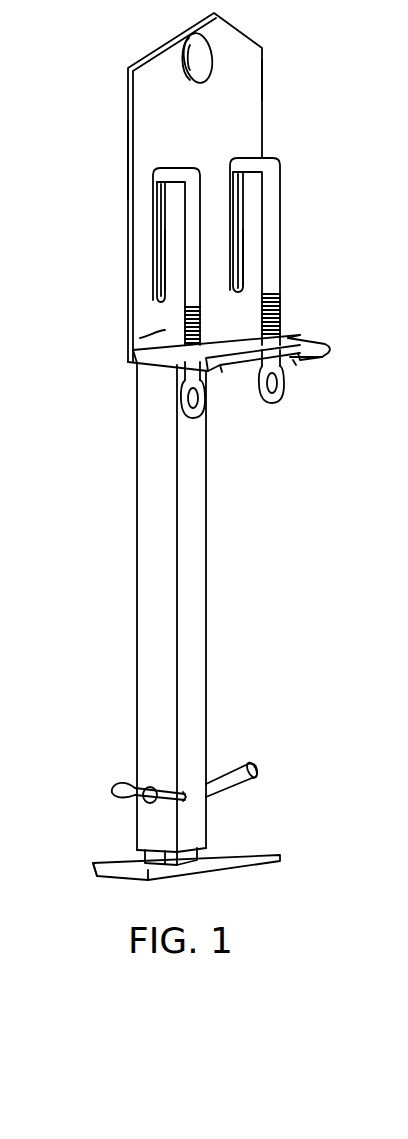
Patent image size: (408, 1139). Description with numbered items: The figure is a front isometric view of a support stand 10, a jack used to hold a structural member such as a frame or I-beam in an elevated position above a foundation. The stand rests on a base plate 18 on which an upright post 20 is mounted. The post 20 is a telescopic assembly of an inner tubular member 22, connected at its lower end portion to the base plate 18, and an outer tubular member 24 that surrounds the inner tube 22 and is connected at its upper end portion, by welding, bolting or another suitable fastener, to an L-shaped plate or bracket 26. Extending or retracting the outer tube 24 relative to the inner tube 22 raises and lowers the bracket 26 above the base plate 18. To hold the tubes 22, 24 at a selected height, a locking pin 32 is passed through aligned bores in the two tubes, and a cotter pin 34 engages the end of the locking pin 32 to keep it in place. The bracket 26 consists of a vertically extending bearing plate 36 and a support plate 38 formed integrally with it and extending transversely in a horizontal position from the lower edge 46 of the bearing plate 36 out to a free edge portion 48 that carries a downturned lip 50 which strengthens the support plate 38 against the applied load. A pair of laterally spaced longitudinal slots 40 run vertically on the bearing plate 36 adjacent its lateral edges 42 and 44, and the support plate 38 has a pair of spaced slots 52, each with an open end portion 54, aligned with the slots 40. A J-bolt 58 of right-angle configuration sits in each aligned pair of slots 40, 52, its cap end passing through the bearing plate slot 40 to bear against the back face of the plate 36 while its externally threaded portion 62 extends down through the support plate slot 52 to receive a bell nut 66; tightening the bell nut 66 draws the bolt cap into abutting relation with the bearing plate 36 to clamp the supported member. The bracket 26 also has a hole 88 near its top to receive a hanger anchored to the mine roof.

The support stand 10 is at (108, 63).
The base plate 18 is at (93, 864).
The upright post 20 is at (217, 537).
The inner tubular member 22 is at (138, 856).
The outer tubular member 24 is at (198, 682).
The L-shaped plate or bracket 26 is at (268, 118).
The locking pin 32 is at (257, 773).
The cotter pin 34 is at (123, 781).
The bearing plate 36 is at (140, 109).
The support plate 38 is at (135, 345).
The longitudinal slots 40 is at (160, 237).
The lateral edge 42 is at (128, 153).
The lateral edge 44 is at (262, 65).
The lower edge 46 is at (165, 334).
The free edge portion 48 is at (294, 340).
The downturned lip 50 is at (297, 362).
The slots 52 is at (312, 356).
The open end portion 54 is at (223, 372).
The J-bolt 58 is at (142, 243).
The externally threaded portion 62 is at (183, 328).
The bell nut 66 is at (205, 417).
The hole 88 is at (183, 62).